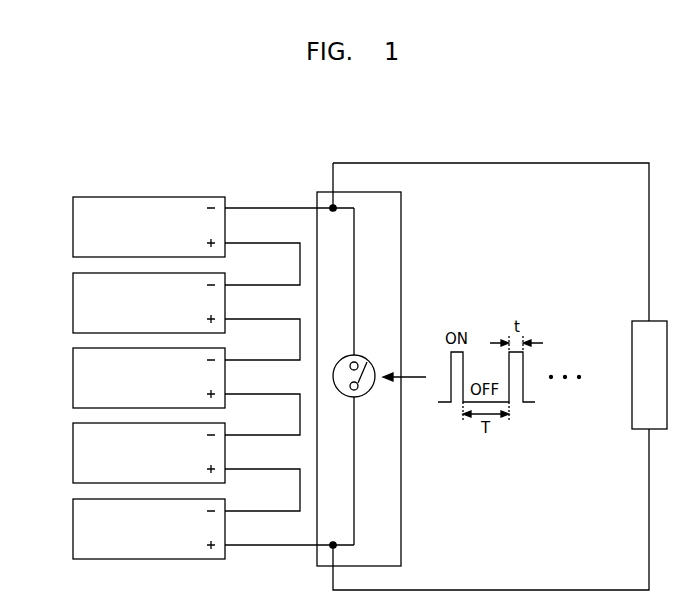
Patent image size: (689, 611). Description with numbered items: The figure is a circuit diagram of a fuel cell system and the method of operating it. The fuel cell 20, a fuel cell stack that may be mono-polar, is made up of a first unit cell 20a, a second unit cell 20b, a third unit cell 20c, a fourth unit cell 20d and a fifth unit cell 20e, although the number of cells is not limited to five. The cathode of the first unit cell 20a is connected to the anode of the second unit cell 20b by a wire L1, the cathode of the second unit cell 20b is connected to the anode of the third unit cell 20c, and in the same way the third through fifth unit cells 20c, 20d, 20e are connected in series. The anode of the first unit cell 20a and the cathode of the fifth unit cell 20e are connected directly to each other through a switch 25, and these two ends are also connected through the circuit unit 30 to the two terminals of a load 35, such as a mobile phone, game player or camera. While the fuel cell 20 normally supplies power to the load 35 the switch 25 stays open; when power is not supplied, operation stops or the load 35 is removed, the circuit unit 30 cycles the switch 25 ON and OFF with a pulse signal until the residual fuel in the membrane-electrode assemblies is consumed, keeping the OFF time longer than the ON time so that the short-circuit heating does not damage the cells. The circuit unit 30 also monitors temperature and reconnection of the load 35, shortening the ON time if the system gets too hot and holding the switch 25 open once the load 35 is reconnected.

The fuel cell 20 is at (63, 197).
The first unit cell 20a is at (149, 529).
The second unit cell 20b is at (149, 453).
The third unit cell 20c is at (149, 378).
The fourth unit cell 20d is at (149, 303).
The fifth unit cell 20e is at (149, 227).
The switch 25 is at (372, 395).
The circuit unit 30 is at (402, 215).
The load 35 is at (632, 395).
The wire L1 is at (260, 513).